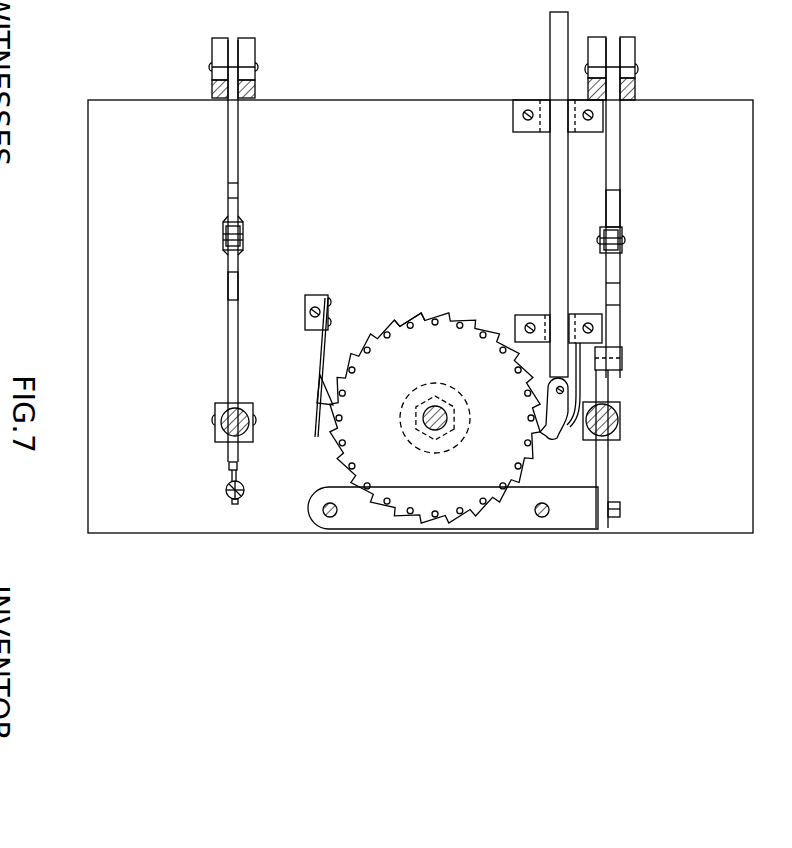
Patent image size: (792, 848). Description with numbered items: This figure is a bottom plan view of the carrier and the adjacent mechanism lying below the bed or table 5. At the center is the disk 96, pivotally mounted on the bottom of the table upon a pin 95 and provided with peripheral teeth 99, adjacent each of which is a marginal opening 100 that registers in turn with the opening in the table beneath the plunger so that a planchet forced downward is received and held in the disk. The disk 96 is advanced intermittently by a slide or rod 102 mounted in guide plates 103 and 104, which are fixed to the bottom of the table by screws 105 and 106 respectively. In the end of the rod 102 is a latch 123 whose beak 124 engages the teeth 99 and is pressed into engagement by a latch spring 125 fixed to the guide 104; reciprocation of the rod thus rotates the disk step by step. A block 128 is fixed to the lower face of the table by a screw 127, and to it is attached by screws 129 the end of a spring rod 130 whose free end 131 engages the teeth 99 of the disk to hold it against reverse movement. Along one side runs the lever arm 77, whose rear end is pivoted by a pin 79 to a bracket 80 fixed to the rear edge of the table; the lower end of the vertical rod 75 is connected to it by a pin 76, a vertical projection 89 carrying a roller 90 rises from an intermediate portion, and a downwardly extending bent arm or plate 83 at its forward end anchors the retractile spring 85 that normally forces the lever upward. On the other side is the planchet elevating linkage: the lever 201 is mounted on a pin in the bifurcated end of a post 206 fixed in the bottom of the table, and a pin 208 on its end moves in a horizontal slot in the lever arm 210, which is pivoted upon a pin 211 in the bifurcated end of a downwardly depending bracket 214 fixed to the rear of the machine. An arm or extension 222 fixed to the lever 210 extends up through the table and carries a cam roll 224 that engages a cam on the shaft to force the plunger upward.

The bed or table 5 is at (113, 533).
The vertical rod 75 is at (218, 436).
The pin 76 is at (218, 412).
The lever arm 77 is at (238, 137).
The pin 79 is at (256, 68).
The bracket 80 is at (212, 90).
The bent arm or plate 83 is at (238, 473).
The retractile spring 85 is at (226, 491).
The vertical projection 89 is at (232, 284).
The roller 90 is at (240, 232).
The pin 95 is at (442, 410).
The disk 96 is at (420, 340).
The peripheral teeth 99 is at (418, 316).
The marginal opening 100 is at (462, 327).
The slide or rod 102 is at (550, 191).
The guide plate 103 is at (518, 116).
The guide plate 104 is at (596, 325).
The screws 105 is at (594, 115).
The screws 106 is at (530, 322).
The latch 123 is at (562, 436).
The beak 124 is at (547, 440).
The latch spring 125 is at (580, 367).
The screw 127 is at (310, 315).
The block 128 is at (308, 299).
The screws 129 is at (331, 318).
The spring strip 130 is at (322, 356).
The pawl 131 is at (326, 398).
The lever 201 is at (606, 475).
The post 206 is at (620, 410).
The pin 208 is at (623, 352).
The lever arm 210 is at (620, 155).
The pin 211 is at (636, 74).
The downwardly depending bracket 214 is at (634, 90).
The arm or extension 222 is at (613, 207).
The cam roll 224 is at (624, 243).